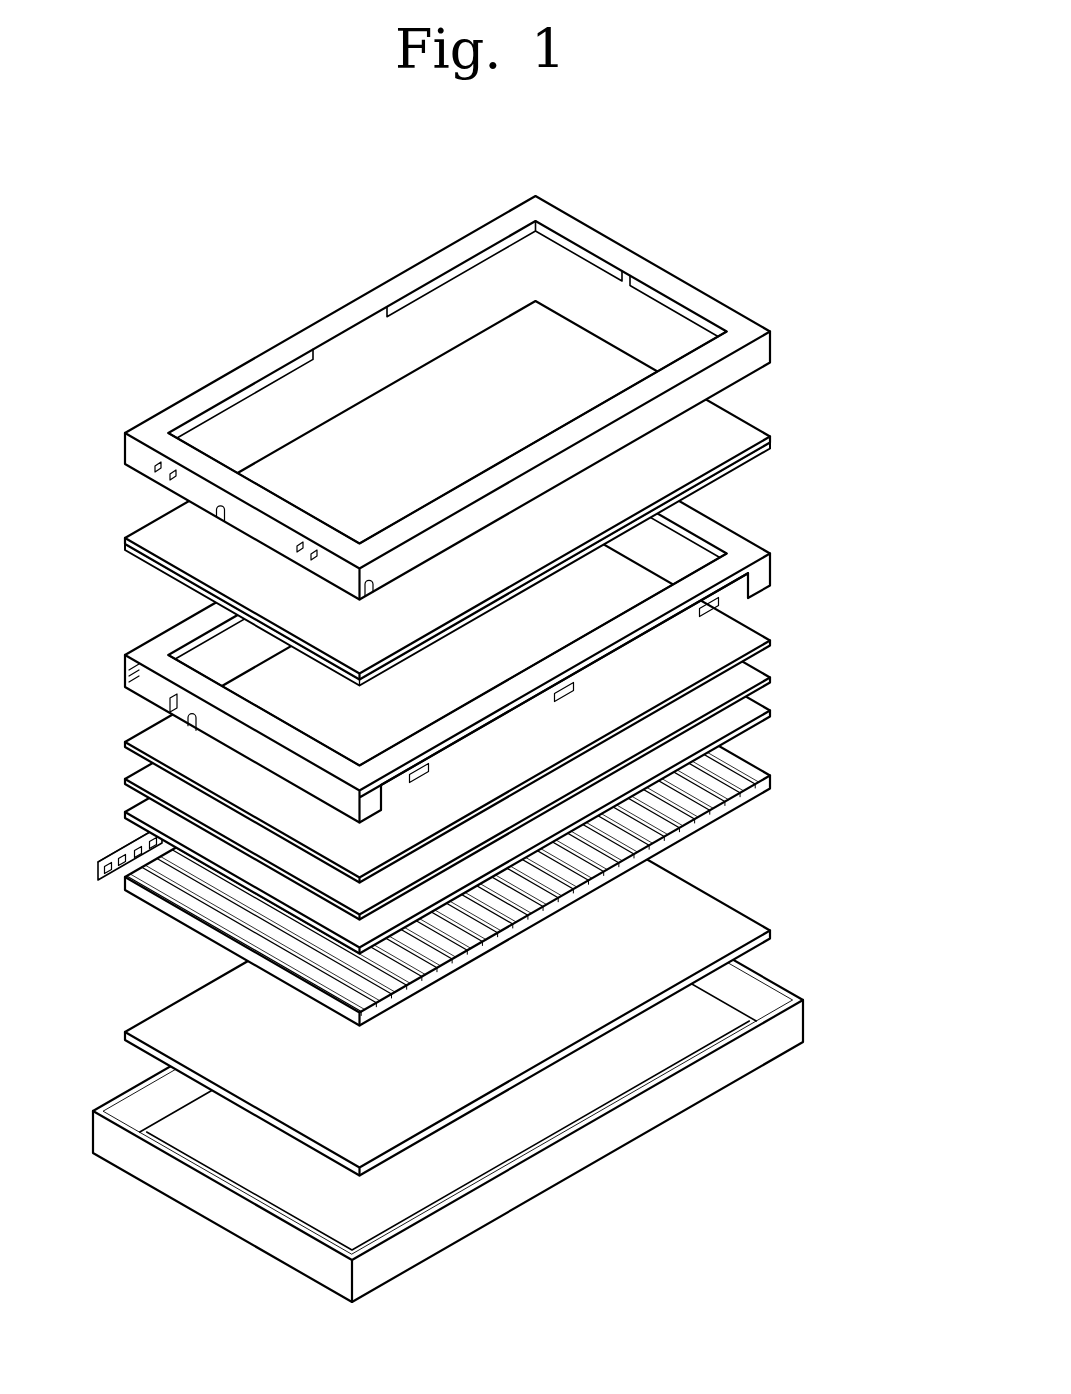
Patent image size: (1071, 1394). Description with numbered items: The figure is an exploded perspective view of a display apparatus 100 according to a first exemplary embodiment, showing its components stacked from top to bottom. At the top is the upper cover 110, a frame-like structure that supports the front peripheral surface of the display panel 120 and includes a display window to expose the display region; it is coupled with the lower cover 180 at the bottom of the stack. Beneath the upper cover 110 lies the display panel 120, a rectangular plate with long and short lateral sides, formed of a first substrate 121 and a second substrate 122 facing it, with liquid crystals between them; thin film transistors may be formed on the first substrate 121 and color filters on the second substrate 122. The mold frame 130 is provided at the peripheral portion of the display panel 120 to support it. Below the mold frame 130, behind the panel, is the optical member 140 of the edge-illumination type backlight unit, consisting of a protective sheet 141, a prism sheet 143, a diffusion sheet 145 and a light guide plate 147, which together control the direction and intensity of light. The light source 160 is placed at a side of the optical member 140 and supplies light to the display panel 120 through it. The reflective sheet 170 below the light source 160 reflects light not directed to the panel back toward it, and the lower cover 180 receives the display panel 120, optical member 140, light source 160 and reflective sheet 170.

The display apparatus 100 is at (369, 240).
The upper cover 110 is at (742, 364).
The display panel 120 is at (533, 493).
The first substrate 121 is at (745, 470).
The second substrate 122 is at (742, 447).
The mold frame 130 is at (742, 560).
The optical member 140 is at (533, 765).
The protective sheet 141 is at (875, 812).
The prism sheet 143 is at (745, 680).
The diffusion sheet 145 is at (745, 720).
The light guide plate 147 is at (745, 785).
The light source 160 is at (112, 852).
The reflective sheet 170 is at (740, 938).
The lower cover 180 is at (578, 1090).